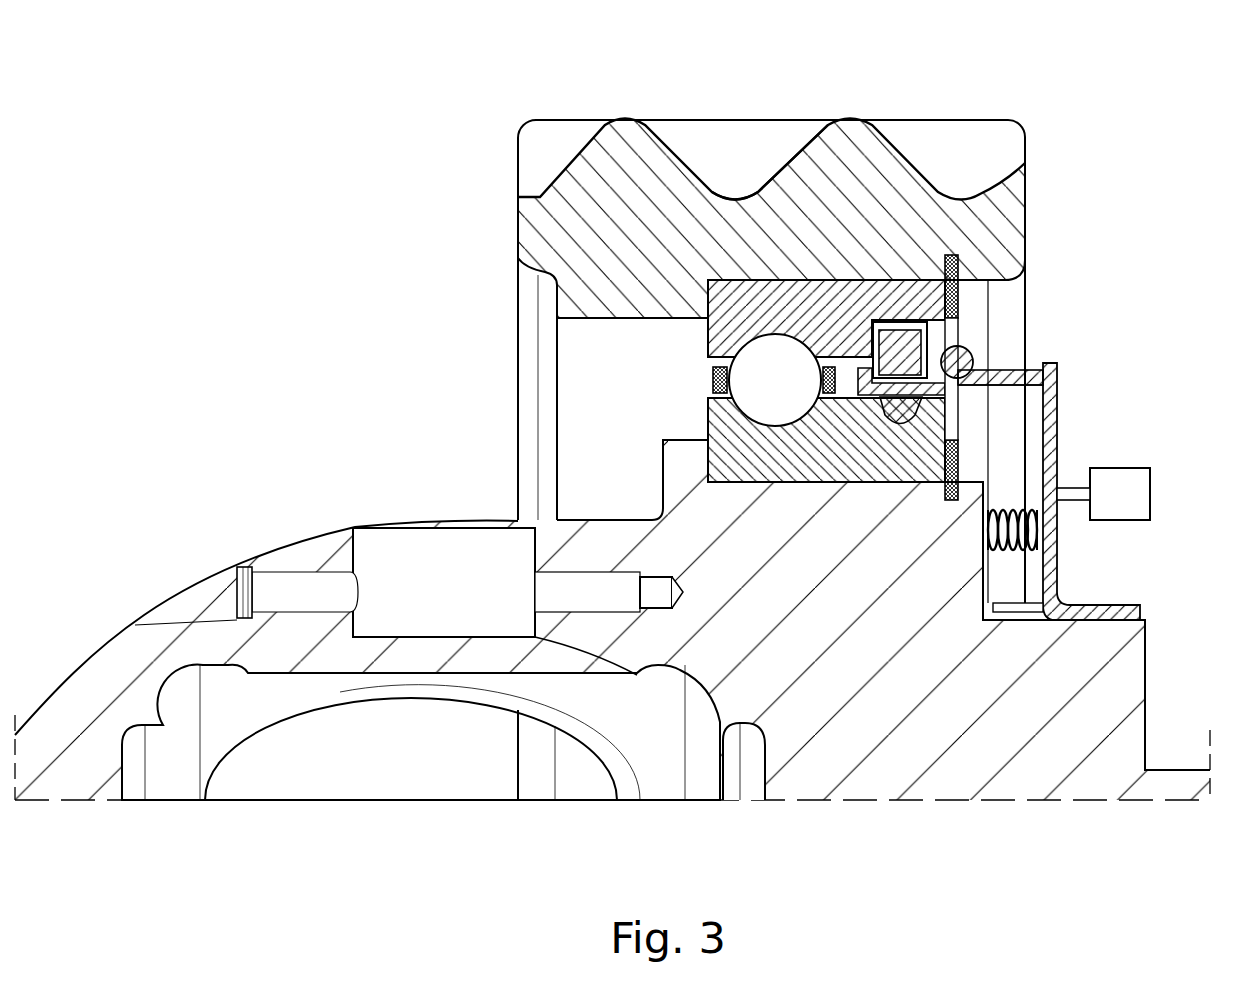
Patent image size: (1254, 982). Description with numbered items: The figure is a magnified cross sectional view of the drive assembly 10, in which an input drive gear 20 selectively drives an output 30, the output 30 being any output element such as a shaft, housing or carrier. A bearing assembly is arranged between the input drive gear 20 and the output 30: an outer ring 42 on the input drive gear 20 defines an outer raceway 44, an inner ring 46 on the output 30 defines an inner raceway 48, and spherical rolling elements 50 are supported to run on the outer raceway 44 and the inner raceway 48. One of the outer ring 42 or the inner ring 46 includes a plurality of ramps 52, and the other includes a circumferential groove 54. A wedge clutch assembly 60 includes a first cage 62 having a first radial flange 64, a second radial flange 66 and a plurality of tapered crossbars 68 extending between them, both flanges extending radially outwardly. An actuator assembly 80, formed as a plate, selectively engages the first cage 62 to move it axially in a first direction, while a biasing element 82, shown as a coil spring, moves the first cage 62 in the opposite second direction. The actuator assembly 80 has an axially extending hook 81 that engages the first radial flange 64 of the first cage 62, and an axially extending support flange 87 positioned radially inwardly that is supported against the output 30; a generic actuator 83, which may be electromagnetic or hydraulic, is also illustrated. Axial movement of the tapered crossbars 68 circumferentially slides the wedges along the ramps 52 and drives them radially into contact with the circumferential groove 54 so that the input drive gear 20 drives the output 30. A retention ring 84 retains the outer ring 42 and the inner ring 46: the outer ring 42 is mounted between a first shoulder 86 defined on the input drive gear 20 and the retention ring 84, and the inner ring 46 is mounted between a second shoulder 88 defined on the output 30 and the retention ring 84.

The drive assembly 10 is at (959, 117).
The input drive gear 20 is at (1013, 200).
The output 30 is at (1130, 725).
The outer ring 42 is at (775, 212).
The outer raceway 44 is at (767, 322).
The inner ring 46 is at (715, 440).
The inner raceway 48 is at (715, 413).
The rolling elements 50 is at (757, 358).
The ramps 52 is at (940, 375).
The circumferential groove 54 is at (1035, 398).
The wedge clutch assembly 60 is at (868, 340).
The first cage 62 is at (1060, 378).
The first radial flange 64 is at (975, 355).
The second radial flange 66 is at (815, 330).
The tapered crossbars 68 is at (900, 425).
The actuator assembly 80 is at (1055, 555).
The axially extending hook 81 is at (962, 325).
The biasing element 82 is at (1045, 520).
The actuator 83 is at (1125, 490).
The retention ring 84 is at (960, 258).
The first shoulder 86 is at (705, 305).
The axially extending support flange 87 is at (1140, 612).
The second shoulder 88 is at (768, 484).